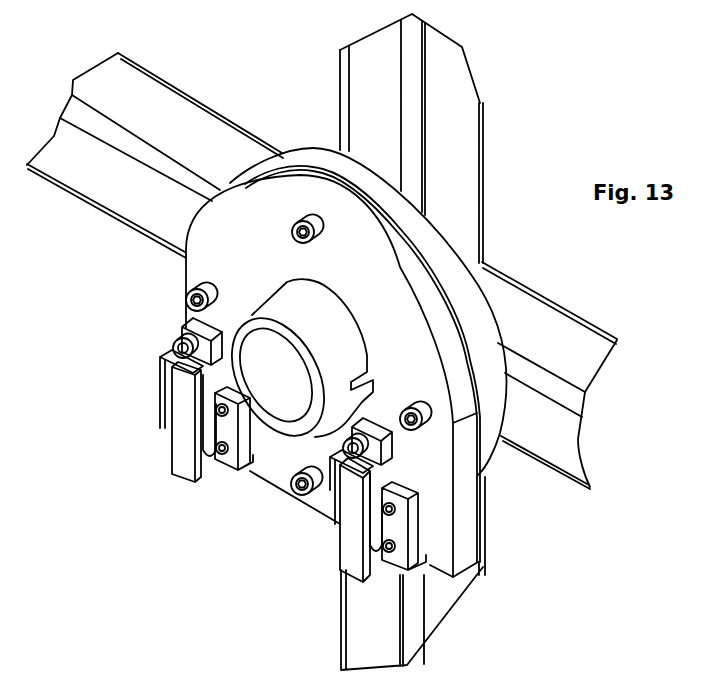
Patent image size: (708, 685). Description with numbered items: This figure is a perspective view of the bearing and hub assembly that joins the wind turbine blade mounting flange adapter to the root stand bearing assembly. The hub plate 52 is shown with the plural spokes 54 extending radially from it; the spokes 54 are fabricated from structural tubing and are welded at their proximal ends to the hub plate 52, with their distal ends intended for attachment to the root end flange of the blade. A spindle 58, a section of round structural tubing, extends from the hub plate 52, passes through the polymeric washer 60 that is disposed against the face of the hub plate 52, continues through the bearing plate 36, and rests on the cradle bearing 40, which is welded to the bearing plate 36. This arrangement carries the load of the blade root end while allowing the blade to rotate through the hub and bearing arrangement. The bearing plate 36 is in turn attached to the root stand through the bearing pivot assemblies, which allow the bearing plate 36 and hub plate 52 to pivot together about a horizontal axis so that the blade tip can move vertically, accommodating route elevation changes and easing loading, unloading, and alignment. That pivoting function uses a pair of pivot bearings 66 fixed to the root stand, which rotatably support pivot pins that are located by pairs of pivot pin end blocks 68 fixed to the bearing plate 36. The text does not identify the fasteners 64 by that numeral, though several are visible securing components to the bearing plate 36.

The bearing plate 36 is at (184, 272).
The cradle bearing 40 is at (362, 343).
The hub plate 52 is at (313, 147).
The spokes 54 is at (157, 75).
The spindle 58 is at (240, 337).
The polymeric washer 60 is at (429, 264).
The fastener bolt 64 is at (206, 288).
The pivot bearings 66 is at (172, 478).
The pivot pin end blocks 68 is at (160, 399).